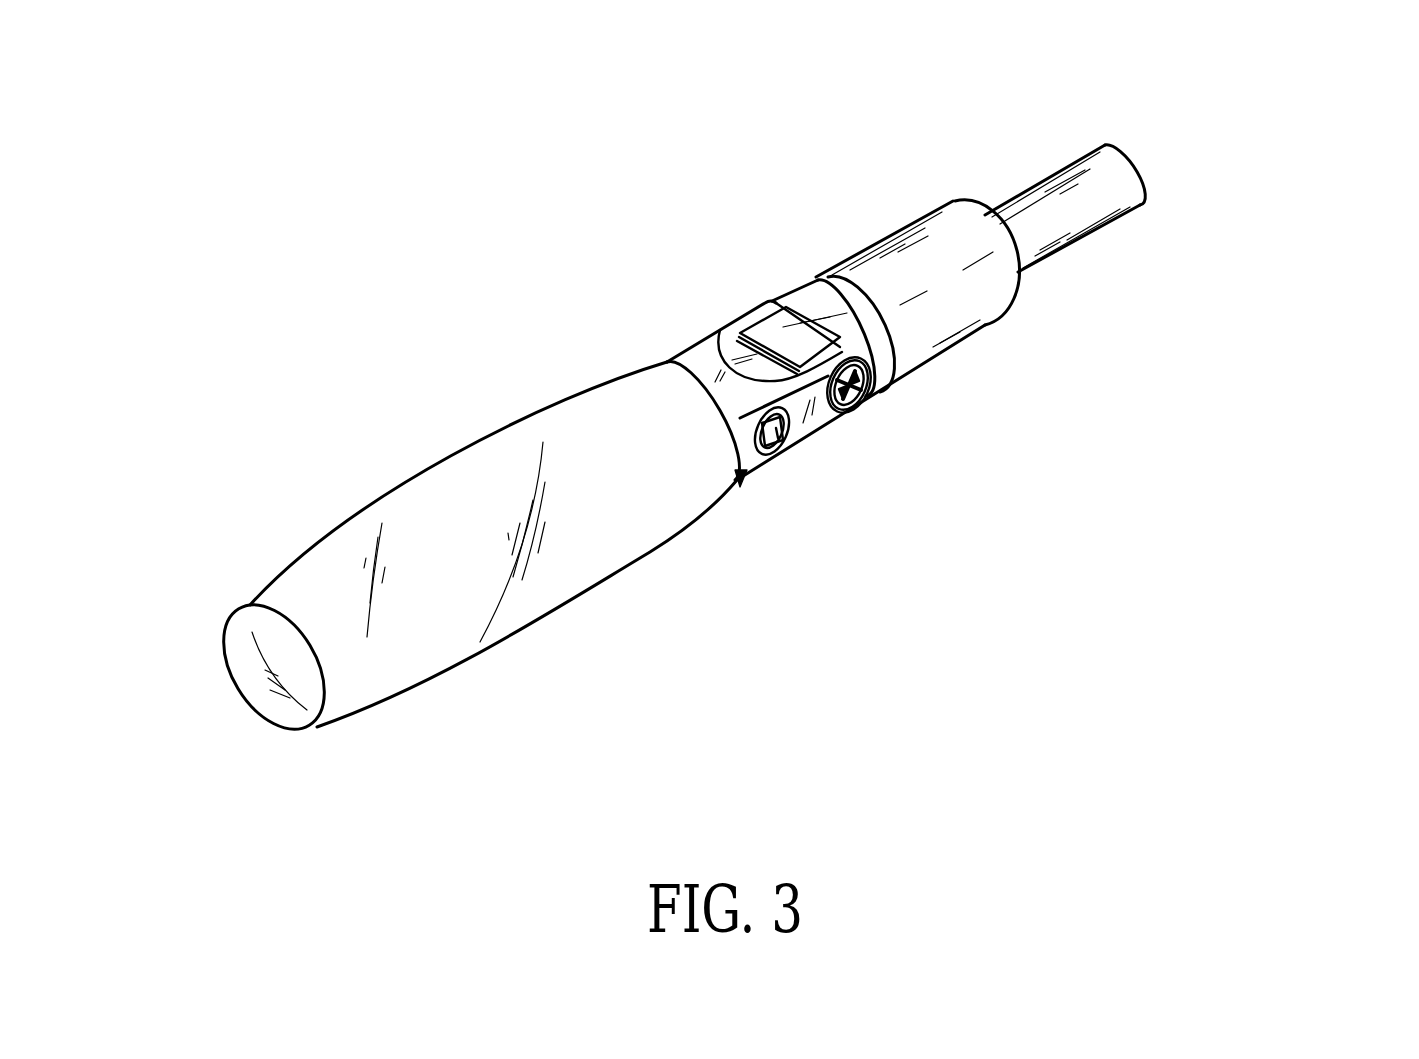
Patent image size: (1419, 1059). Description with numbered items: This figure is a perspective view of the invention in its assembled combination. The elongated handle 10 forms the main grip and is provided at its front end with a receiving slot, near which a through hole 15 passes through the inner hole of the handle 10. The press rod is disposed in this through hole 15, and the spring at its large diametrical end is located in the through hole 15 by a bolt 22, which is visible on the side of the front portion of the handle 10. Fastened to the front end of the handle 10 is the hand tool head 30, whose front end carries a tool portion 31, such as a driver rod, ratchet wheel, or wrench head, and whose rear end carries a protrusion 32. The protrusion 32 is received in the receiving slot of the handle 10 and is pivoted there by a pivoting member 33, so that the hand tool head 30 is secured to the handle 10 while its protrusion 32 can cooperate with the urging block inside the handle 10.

The handle 10 is at (533, 477).
The through hole 15 is at (740, 477).
The bolt 22 is at (775, 437).
The hand tool head 30 is at (938, 317).
The tool portion 31 is at (1040, 213).
The protrusion 32 is at (813, 322).
The pivoting member 33 is at (853, 391).